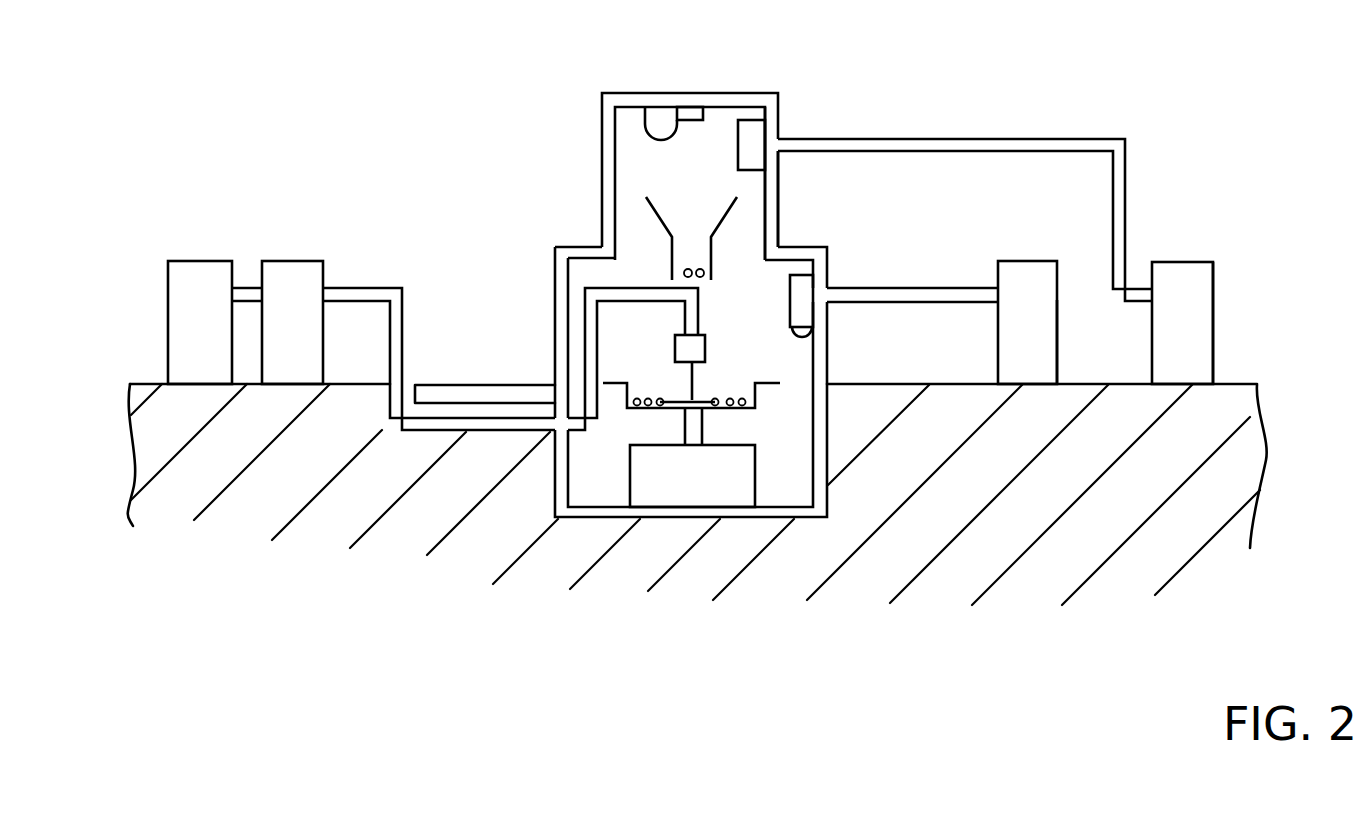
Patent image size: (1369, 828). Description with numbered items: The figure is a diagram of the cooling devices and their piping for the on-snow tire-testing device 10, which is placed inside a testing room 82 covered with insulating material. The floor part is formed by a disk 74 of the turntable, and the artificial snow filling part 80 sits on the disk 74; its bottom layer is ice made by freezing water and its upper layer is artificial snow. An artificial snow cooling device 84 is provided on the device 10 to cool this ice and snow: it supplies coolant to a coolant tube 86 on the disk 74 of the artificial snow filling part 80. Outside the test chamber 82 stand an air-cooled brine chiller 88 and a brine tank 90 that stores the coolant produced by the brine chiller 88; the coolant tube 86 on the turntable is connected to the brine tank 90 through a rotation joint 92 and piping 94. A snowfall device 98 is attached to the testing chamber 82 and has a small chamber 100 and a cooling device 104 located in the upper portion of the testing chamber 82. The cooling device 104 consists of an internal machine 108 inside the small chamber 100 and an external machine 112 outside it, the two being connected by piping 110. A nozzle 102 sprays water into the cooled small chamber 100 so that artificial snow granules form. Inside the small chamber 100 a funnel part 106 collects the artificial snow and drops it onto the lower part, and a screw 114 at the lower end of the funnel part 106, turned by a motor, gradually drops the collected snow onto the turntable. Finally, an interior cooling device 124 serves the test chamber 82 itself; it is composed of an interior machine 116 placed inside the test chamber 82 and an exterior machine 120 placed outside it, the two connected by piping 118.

The on-snow tire-testing device 10 is at (705, 293).
The disk 74 is at (727, 408).
The artificial snow filling part 80 is at (648, 398).
The testing room 82 is at (596, 272).
The artificial snow cooling device 84 is at (252, 263).
The coolant tube 86 is at (731, 398).
The brine chiller 88 is at (200, 261).
The brine tank 90 is at (305, 261).
The rotation joint 92 is at (705, 348).
The piping 94 is at (403, 318).
The snowfall device 98 is at (596, 138).
The small chamber 100 is at (777, 205).
The nozzle 102 is at (643, 125).
The cooling device 104 is at (1192, 255).
The funnel part 106 is at (725, 218).
The internal machine 108 is at (752, 120).
The piping 110 is at (1093, 139).
The external machine 112 is at (1213, 300).
The screw 114 is at (690, 268).
The interior machine 116 is at (816, 340).
The piping 118 is at (957, 288).
The exterior machine 120 is at (1057, 325).
The interior cooling device 124 is at (1034, 254).